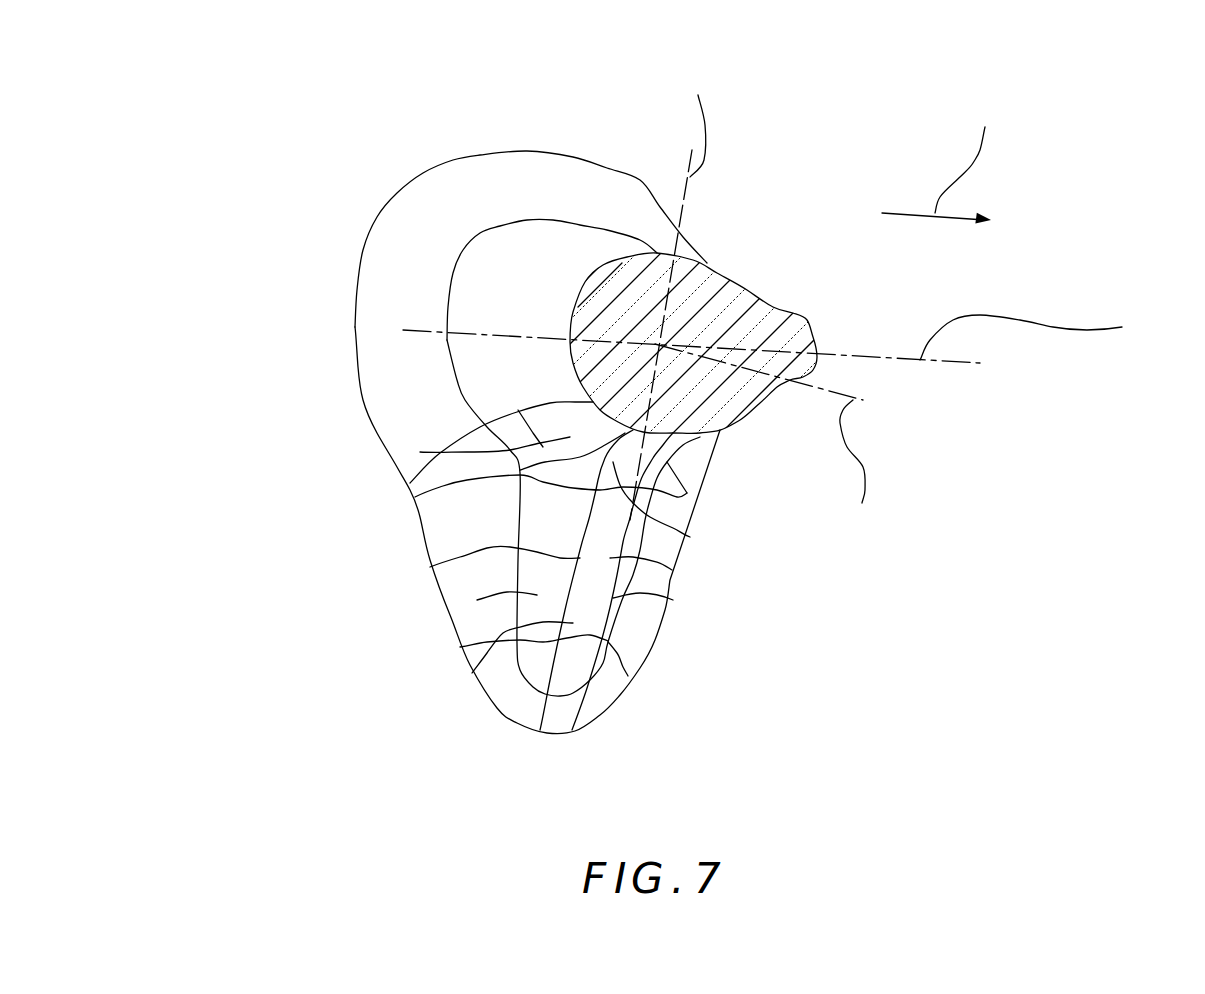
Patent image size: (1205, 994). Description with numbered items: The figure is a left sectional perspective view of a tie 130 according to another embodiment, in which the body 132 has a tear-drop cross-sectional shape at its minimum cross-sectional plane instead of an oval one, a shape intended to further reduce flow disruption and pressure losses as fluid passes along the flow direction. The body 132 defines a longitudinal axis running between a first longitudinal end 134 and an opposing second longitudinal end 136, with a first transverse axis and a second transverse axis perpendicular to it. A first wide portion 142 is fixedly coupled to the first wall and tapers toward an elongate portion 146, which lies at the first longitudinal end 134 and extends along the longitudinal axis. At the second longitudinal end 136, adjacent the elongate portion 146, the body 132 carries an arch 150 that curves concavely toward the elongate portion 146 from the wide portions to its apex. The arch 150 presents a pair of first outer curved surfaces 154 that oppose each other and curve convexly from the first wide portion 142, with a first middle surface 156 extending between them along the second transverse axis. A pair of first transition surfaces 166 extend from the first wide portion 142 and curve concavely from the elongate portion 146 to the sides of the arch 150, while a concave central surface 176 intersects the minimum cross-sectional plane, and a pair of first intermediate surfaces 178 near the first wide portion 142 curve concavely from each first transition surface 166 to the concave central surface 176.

The tie 130 is at (228, 76).
The body 132 is at (390, 166).
The first longitudinal end 134 is at (556, 117).
The second longitudinal end 136 is at (564, 758).
The first wide portion 142 is at (468, 517).
The elongate portion 146 is at (533, 327).
The arch 150 is at (634, 623).
The first outer curved surfaces 154 is at (477, 600).
The first middle surface 156 is at (460, 647).
The first transition surfaces 166 is at (510, 425).
The concave central surface 176 is at (690, 537).
The first intermediate surfaces 178 is at (420, 452).